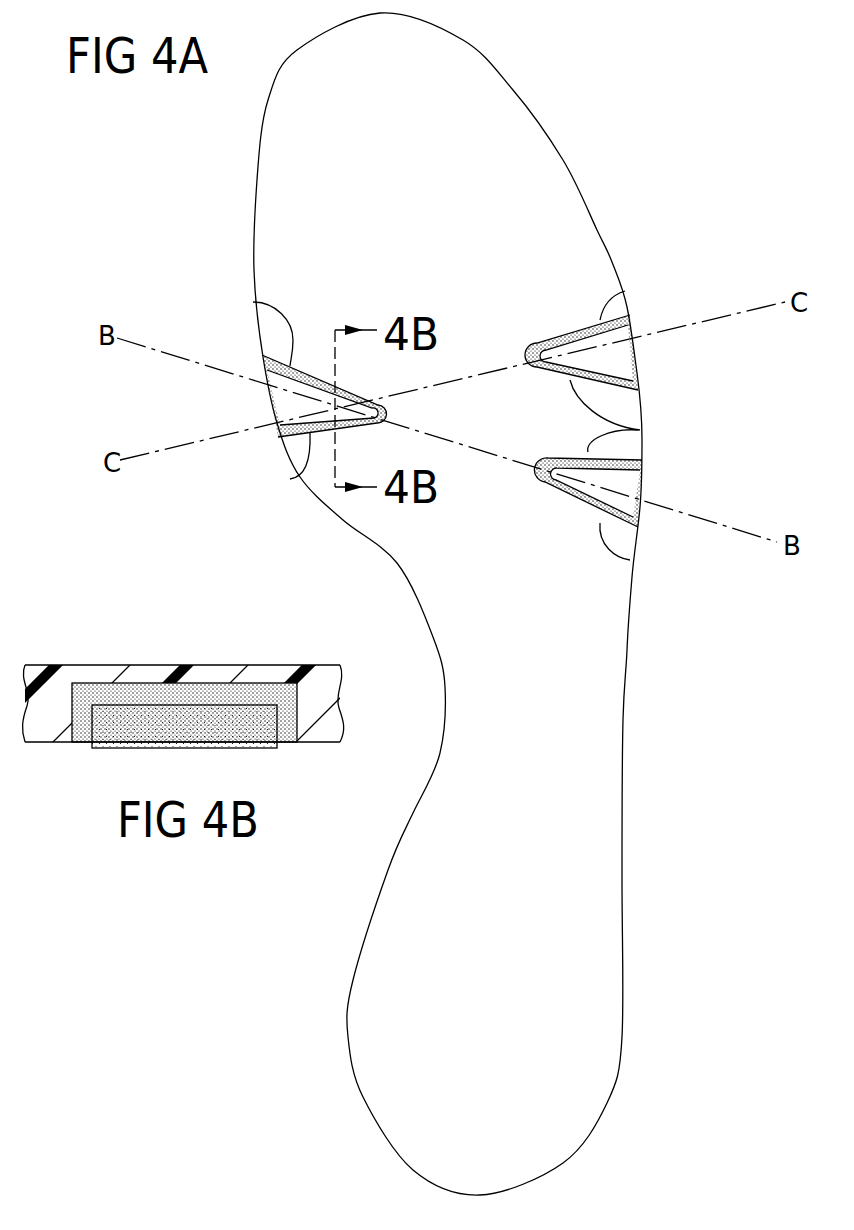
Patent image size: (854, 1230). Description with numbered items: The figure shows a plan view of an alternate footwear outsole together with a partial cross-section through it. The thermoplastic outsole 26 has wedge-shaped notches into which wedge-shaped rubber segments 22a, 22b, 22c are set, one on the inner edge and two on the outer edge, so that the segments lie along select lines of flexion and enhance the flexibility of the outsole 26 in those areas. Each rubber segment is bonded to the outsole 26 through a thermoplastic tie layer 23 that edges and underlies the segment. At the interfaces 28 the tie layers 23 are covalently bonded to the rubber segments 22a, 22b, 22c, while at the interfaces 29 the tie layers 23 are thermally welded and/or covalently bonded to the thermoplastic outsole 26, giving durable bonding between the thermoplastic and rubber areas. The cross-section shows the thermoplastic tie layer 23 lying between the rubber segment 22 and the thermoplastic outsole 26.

In FIG. 4B, the rubber segment 22 is at (212, 730).
In FIG. 4A, the wedge-shaped rubber segment 22a is at (266, 400).
In FIG. 4A, the wedge-shaped rubber segment 22b is at (640, 361).
In FIG. 4A, the wedge-shaped rubber segment 22c is at (645, 495).
In FIG. 4A, the thermoplastic tie layer 23 is at (262, 358).
In FIG. 4B, the thermoplastic tie layer 23 is at (228, 690).
In FIG. 4A, the thermoplastic outsole 26 is at (583, 272).
In FIG. 4B, the thermoplastic outsole 26 is at (288, 672).
In FIG. 4A, the interface 28 is at (290, 479).
In FIG. 4A, the interface 29 is at (253, 302).